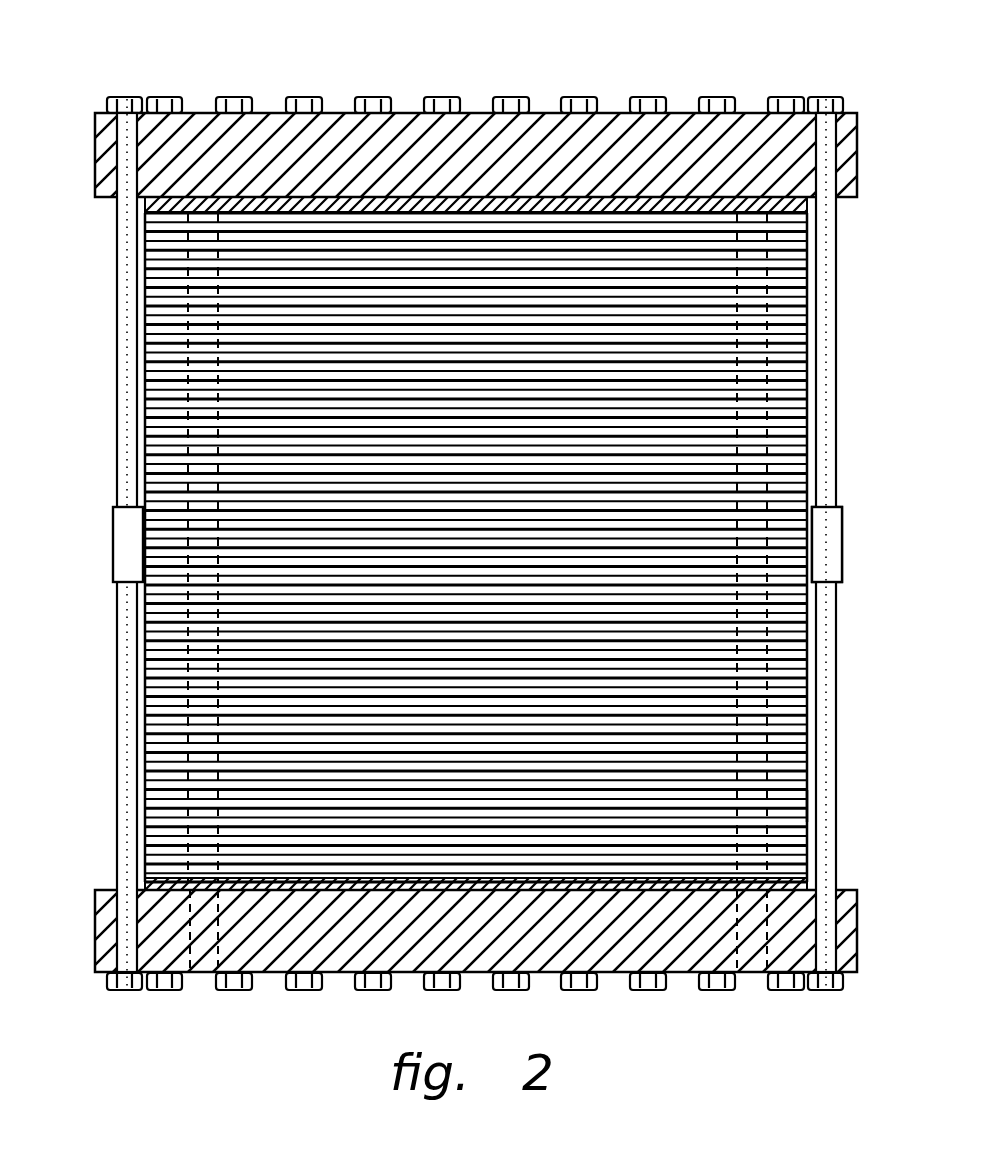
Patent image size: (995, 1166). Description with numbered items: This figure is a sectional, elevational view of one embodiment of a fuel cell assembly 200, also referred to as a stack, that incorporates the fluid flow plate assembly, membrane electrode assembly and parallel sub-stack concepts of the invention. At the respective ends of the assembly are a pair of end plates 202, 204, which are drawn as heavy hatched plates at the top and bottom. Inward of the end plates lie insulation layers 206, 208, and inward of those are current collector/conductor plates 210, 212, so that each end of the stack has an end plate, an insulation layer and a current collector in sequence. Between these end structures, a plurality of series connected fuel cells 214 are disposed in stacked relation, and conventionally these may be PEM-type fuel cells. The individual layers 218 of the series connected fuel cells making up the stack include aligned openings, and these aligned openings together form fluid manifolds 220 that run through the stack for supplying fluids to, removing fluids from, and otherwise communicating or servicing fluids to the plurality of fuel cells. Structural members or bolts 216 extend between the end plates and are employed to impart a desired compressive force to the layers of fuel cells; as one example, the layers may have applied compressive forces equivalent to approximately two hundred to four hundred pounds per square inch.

The fuel cell assembly 200 is at (470, 45).
The end plate 202 is at (97, 940).
The end plate 204 is at (96, 142).
The insulation layer 206 is at (155, 889).
The insulation layer 208 is at (147, 199).
The current collector/conductor plate 210 is at (150, 886).
The current collector/conductor plate 212 is at (147, 213).
The series connected fuel cells 214 is at (816, 335).
The structural members or bolts 216 is at (116, 617).
The individual layers 218 is at (823, 813).
The fluid manifolds 220 is at (190, 312).